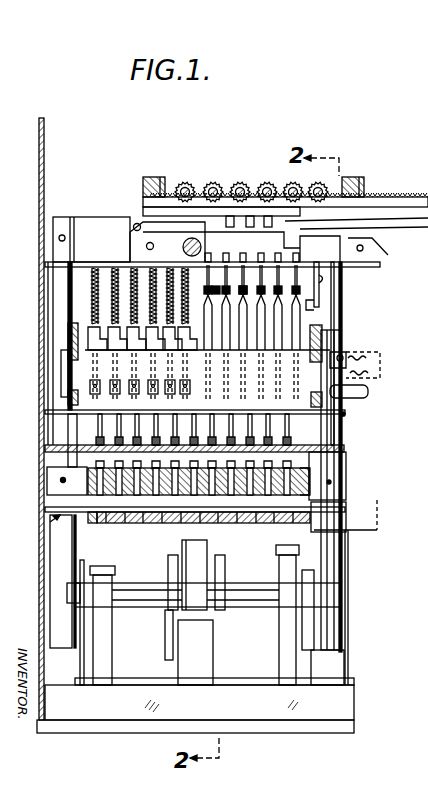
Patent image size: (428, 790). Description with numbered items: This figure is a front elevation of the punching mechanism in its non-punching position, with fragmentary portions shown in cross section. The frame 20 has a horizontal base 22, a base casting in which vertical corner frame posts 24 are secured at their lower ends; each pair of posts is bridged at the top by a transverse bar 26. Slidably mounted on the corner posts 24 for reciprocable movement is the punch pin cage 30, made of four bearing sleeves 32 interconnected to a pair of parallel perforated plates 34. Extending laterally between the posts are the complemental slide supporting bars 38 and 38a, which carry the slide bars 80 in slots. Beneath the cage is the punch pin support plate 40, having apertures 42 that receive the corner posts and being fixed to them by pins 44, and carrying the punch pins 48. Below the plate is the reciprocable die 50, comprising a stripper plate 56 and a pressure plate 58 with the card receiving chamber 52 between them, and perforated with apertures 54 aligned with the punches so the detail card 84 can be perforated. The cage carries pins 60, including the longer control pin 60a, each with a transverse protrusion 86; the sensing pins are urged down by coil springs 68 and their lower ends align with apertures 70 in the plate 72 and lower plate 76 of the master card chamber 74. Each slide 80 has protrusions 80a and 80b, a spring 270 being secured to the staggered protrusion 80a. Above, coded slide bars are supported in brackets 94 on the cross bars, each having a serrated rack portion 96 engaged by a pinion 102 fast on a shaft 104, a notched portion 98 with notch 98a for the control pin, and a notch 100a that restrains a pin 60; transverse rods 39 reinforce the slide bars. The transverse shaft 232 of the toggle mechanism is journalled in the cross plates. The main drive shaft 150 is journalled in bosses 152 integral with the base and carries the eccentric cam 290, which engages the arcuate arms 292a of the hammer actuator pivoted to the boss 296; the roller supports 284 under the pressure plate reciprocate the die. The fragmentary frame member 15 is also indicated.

The frame plate 15 is at (39, 148).
The frame 20 is at (350, 634).
The horizontal base 22 is at (340, 706).
The corner frame posts 24 is at (342, 622).
The transverse bar 26 is at (99, 219).
The punch pin cage 30 is at (46, 282).
The bearing sleeves 32 is at (50, 262).
The perforated plates 34 is at (382, 266).
The slide supporting bar 38 is at (68, 338).
The slide supporting bar 38a is at (66, 398).
The transverse rods 39 is at (156, 170).
The punch pin support plate 40 is at (60, 482).
The apertures 42 is at (48, 478).
The pins 44 is at (48, 509).
The punch pins 48 is at (342, 483).
The die 50 is at (52, 545).
The card receiving chamber 52 is at (50, 522).
The apertures 54 is at (150, 524).
The stripper plate 56 is at (346, 505).
The pressure plate 58 is at (344, 519).
The pins 60 is at (262, 336).
The control pin 60a is at (194, 240).
The coil spring 68 is at (240, 289).
The apertures 70 is at (106, 440).
The plate 72 is at (66, 437).
The master card chamber 74 is at (195, 382).
The lower plate 76 is at (348, 452).
The slide bar 80 is at (74, 377).
The protrusion 80a is at (348, 352).
The protrusion 80b is at (370, 389).
The detail card 84 is at (94, 526).
The protrusion 86 is at (320, 292).
The brackets 94 is at (136, 223).
The serrated rack portion 96 is at (370, 204).
The notched portion 98 is at (388, 226).
The notch 98a is at (242, 215).
The notch 100a is at (286, 246).
The pinion 102 is at (215, 186).
The shaft 104 is at (184, 183).
The main drive shaft 150 is at (152, 584).
The bosses 152 is at (108, 640).
The transverse shaft 232 is at (146, 246).
The spring 270 is at (376, 362).
The roller supports 284 is at (92, 570).
The eccentric cam 290 is at (210, 552).
The arcuate arms 292a is at (221, 574).
The boss 296 is at (190, 667).